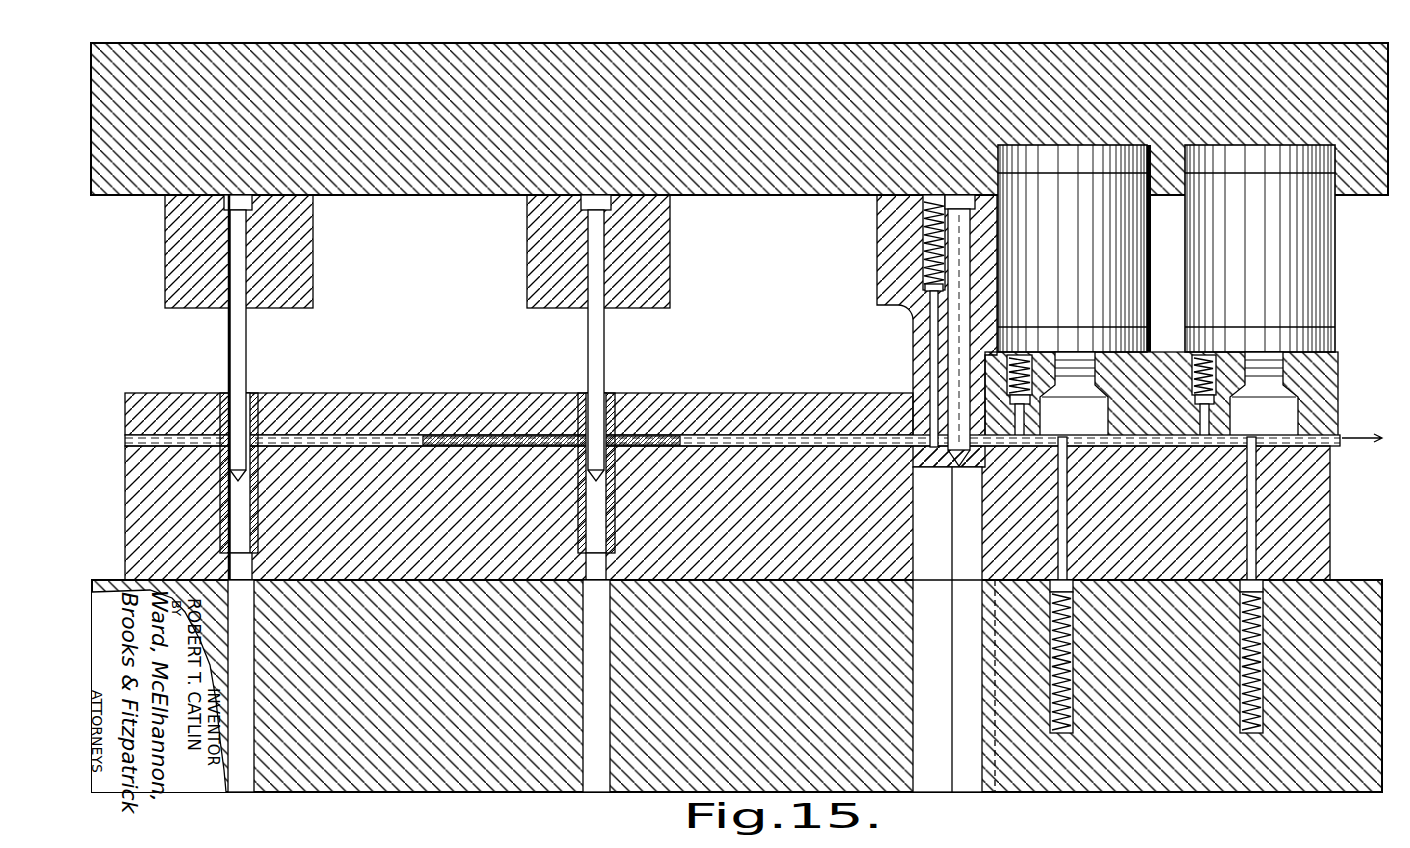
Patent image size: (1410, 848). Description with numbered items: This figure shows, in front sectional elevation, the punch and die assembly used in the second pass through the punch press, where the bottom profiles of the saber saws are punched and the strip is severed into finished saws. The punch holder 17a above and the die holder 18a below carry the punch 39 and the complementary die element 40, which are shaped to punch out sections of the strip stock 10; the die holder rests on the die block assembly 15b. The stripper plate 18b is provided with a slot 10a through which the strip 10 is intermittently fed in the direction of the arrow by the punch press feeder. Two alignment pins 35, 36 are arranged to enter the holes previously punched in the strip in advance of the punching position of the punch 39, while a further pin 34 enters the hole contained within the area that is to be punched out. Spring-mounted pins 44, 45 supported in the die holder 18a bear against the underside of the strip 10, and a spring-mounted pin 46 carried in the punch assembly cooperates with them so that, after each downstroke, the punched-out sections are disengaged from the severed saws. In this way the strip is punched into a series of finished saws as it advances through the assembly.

The punch holder 17a is at (498, 62).
The alignment pin 36 is at (240, 345).
The stripper plate 18b is at (318, 400).
The strip 10 is at (395, 435).
The slot 10a is at (455, 434).
The alignment pin 35 is at (590, 345).
The spring-mounted pin 46 is at (933, 322).
The punch 39 is at (920, 415).
The pin 34 is at (958, 322).
The spring-mounted pin 44 is at (1064, 514).
The spring-mounted pin 45 is at (1250, 510).
The die element 40 is at (930, 531).
The die block assembly 15b is at (785, 594).
The die holder 18a is at (440, 565).